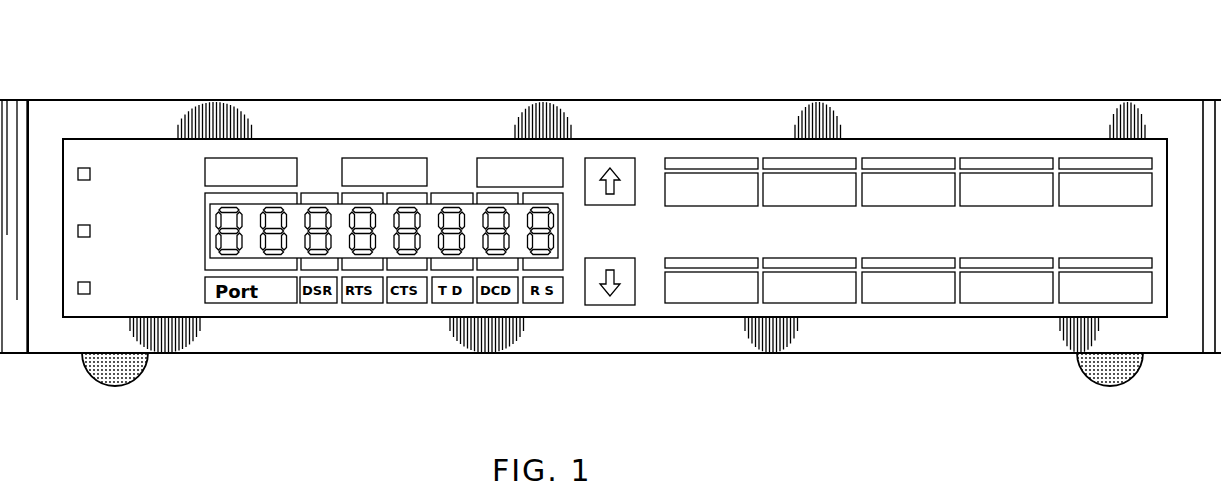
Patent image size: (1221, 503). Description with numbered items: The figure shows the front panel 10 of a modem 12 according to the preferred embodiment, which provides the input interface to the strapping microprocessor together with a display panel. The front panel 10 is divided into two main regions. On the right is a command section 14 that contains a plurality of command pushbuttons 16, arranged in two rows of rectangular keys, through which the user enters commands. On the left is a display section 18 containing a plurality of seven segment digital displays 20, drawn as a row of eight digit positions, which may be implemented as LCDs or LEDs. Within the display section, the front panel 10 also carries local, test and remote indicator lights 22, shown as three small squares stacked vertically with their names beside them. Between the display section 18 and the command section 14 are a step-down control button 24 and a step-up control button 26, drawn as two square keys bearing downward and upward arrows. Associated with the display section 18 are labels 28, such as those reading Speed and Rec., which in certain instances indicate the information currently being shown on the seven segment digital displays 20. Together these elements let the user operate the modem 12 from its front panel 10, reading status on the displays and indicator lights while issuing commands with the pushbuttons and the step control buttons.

The front panel 10 is at (610, 223).
The modem 12 is at (755, 90).
The command section 14 is at (1110, 232).
The command pushbuttons 16 is at (997, 180).
The display section 18 is at (384, 158).
The seven segment digital displays 20 is at (453, 210).
The local, test and remote indicator lights 22 is at (78, 288).
The step-down control button 24 is at (617, 303).
The step-up control button 26 is at (622, 160).
The labels 28 is at (355, 158).